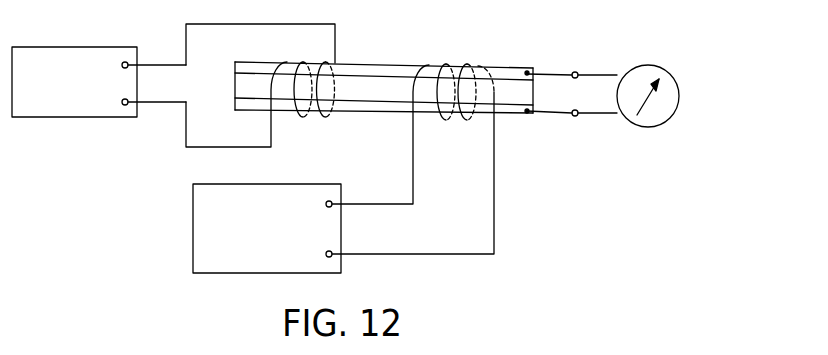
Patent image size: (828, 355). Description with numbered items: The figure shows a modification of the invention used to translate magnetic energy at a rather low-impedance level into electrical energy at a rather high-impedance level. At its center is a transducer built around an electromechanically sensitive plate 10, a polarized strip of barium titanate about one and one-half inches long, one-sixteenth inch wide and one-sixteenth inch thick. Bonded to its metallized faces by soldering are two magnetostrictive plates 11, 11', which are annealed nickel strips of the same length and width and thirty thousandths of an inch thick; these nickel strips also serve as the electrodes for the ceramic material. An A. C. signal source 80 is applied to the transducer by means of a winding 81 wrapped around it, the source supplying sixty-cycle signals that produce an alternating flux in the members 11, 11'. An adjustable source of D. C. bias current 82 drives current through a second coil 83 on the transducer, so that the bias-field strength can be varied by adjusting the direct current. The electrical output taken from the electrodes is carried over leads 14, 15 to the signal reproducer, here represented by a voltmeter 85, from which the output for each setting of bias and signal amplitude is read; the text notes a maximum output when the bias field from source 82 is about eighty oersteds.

The electromechanically sensitive plate 10 is at (523, 92).
The magnetostrictive plate 11 is at (541, 56).
The magnetostrictive plate 11' is at (542, 130).
The lead 14 is at (578, 72).
The lead 15 is at (578, 116).
The A. C. signal source 80 is at (85, 117).
The winding 81 is at (297, 62).
The adjustable source of D. C. bias current 82 is at (193, 222).
The second coil 83 is at (457, 65).
The voltmeter 85 is at (667, 120).